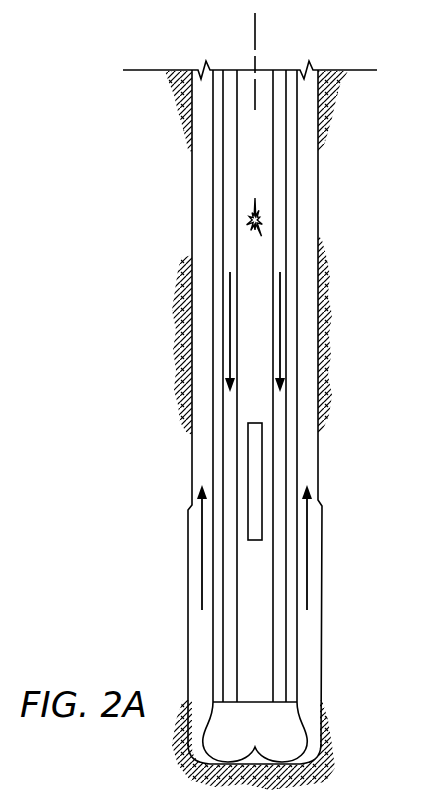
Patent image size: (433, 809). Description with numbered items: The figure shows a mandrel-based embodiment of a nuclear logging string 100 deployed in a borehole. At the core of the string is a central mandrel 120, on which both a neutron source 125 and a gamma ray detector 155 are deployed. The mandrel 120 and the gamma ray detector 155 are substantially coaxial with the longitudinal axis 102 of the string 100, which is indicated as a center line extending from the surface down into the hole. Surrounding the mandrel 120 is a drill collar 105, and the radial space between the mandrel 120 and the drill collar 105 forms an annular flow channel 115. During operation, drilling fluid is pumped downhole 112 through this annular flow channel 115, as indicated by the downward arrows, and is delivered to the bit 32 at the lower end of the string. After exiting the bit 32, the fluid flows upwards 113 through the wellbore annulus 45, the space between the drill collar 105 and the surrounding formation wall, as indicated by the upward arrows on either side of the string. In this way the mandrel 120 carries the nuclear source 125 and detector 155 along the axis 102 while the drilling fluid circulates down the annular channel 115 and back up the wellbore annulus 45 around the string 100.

The nuclear logging string 100 is at (143, 158).
The longitudinal axis 102 is at (255, 43).
The wellbore annulus 45 is at (308, 204).
The drill collar 105 is at (214, 638).
The central mandrel 120 is at (258, 147).
The neutron source 125 is at (247, 221).
The downhole pumping of drilling fluid 112 is at (285, 335).
The gamma ray detector 155 is at (250, 470).
The annular flow channel 115 is at (232, 544).
The upward flow 113 is at (306, 550).
The bit 32 is at (268, 738).